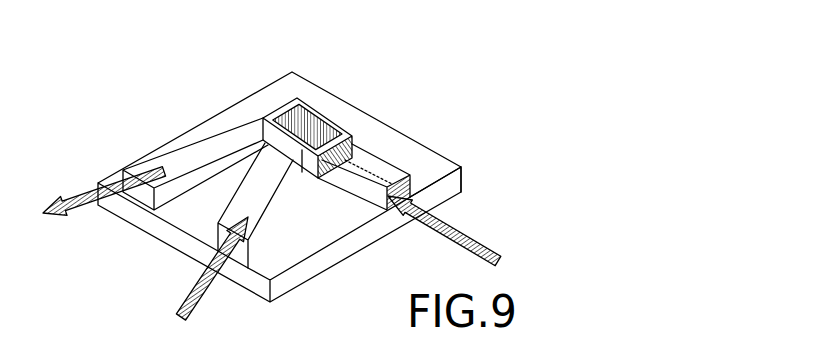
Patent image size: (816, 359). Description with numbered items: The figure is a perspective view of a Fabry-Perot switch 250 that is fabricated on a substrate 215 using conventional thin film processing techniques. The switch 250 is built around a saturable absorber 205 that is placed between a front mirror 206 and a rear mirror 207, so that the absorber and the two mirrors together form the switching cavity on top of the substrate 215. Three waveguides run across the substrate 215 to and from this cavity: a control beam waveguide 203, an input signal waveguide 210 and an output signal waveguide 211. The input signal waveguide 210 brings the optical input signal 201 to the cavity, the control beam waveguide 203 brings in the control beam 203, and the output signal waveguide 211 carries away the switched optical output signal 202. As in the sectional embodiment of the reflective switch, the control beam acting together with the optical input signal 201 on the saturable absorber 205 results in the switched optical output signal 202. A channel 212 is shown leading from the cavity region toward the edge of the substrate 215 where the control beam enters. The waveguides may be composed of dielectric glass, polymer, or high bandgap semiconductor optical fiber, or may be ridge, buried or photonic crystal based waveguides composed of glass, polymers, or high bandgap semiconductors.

The optical input signal 201 is at (186, 312).
The switched optical output signal 202 is at (68, 196).
The control beam waveguide 203 is at (485, 248).
The saturable absorber 205 is at (279, 110).
The front mirror 206 is at (257, 120).
The rear mirror 207 is at (311, 110).
The input signal waveguide 210 is at (272, 188).
The output signal waveguide 211 is at (207, 158).
The waveguide channel 212 is at (372, 155).
The substrate 215 is at (426, 165).
The Fabry-Perot switch 250 is at (423, 82).